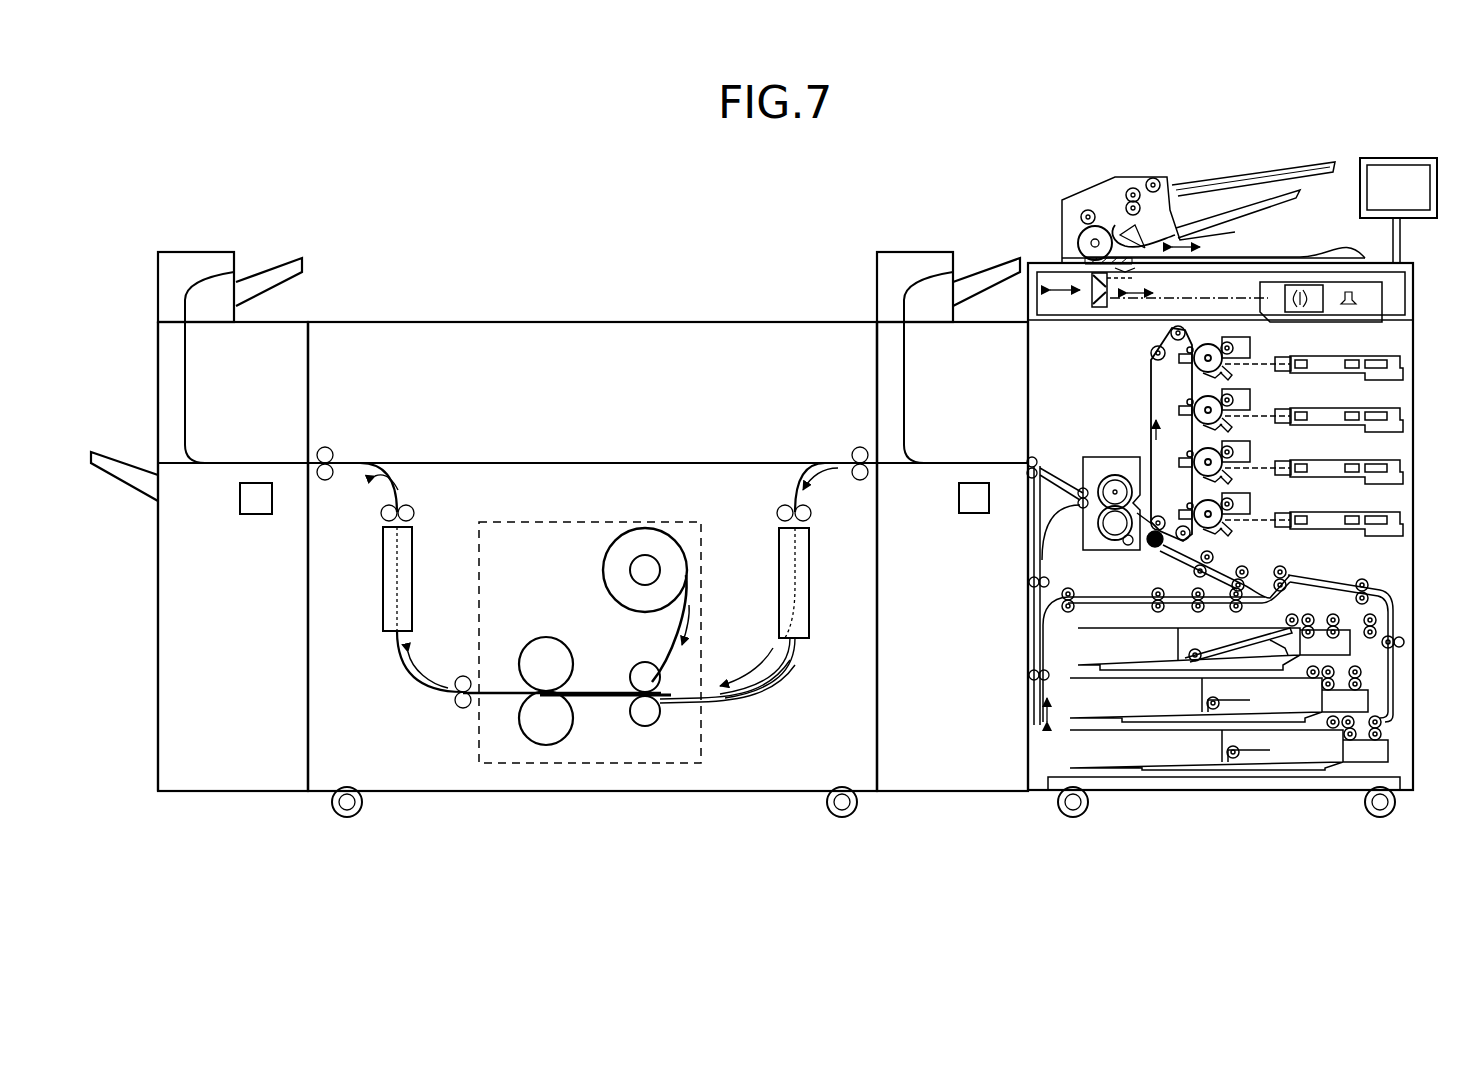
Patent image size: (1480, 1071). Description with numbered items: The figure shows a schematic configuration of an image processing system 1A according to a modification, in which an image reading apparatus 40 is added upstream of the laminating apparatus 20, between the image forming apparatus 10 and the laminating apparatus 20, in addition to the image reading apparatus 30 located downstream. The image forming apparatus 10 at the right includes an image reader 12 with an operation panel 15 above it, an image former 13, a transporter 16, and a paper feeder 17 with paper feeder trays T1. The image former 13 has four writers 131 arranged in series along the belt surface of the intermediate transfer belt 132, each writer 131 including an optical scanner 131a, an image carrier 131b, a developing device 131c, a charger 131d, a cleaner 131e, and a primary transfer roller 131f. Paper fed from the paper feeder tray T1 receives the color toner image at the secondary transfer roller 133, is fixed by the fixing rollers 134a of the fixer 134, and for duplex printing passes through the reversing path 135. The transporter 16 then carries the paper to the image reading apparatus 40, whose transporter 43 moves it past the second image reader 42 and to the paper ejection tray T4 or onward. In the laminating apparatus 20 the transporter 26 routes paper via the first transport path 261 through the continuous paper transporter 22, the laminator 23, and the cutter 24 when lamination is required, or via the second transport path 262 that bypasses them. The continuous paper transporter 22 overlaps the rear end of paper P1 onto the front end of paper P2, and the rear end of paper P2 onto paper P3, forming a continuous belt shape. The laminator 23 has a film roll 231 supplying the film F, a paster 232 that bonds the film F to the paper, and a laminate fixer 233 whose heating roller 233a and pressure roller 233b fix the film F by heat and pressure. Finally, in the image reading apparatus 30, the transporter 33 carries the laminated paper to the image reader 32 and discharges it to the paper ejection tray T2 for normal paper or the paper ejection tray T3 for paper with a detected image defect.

The image processing system 1A is at (1420, 263).
The image forming apparatus 10 is at (1346, 156).
The image reader 12 is at (1043, 263).
The image former 13 is at (1083, 362).
The operation panel 15 is at (1404, 160).
The transporter 16 is at (1320, 581).
The paper feeder 17 is at (1400, 672).
The laminating apparatus 20 is at (547, 318).
The continuous paper transporter 22 is at (810, 561).
The laminator 23 is at (525, 520).
The cutter 24 is at (383, 548).
The transporter 26 is at (826, 446).
The image reading apparatus 30 is at (152, 328).
The image reader 32 is at (258, 513).
The transporter 33 is at (218, 456).
The image reading apparatus 40 is at (957, 800).
The image reader 42 is at (972, 513).
The transporter 43 is at (940, 455).
The writer 131 is at (1393, 354).
The optical scanner 131a is at (1306, 362).
The image carrier 131b is at (1206, 346).
The developing device 131c is at (1250, 352).
The charger 131d is at (1222, 372).
The cleaner 131e is at (1200, 374).
The primary transfer roller 131f is at (1185, 362).
The intermediate transfer belt 132 is at (1150, 418).
The secondary transfer roller 133 is at (1157, 546).
The fixer 134 is at (1106, 460).
The fixing rollers 134a is at (1108, 500).
The reversing path 135 is at (1030, 628).
The film roll 231 is at (606, 554).
The paster 232 is at (640, 666).
The laminate fixer 233 is at (512, 652).
The heating roller 233a is at (546, 640).
The pressure roller 233b is at (530, 726).
The first transport path 261 is at (795, 491).
The second transport path 262 is at (660, 462).
The film F is at (678, 638).
The paper P1 is at (601, 700).
The paper P2 is at (724, 699).
The paper P3 is at (790, 656).
The paper feeder tray T1 is at (1057, 752).
The paper ejection tray T2 is at (133, 487).
The paper ejection tray T3 is at (285, 268).
The paper ejection tray T4 is at (998, 266).